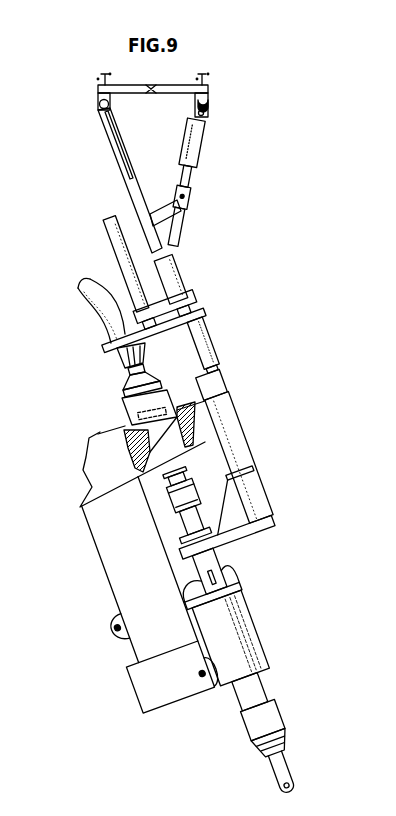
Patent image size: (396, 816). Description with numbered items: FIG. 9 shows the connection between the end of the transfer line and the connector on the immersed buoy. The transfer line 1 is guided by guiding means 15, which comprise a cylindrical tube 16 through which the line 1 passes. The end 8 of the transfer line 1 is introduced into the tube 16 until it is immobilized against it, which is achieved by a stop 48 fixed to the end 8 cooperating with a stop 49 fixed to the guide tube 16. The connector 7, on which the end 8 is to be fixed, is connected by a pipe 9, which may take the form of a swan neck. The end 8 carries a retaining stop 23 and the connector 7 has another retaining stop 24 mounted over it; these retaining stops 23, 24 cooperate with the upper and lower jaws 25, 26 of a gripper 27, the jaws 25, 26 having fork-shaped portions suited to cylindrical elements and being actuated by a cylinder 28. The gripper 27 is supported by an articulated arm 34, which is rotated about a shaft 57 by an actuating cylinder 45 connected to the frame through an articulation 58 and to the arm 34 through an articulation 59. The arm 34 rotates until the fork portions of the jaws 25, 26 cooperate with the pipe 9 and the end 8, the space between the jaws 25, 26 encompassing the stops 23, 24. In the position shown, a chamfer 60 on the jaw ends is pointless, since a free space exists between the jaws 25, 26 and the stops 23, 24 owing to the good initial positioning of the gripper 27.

The transfer line 1 is at (281, 769).
The connector 7 is at (96, 395).
The end of the transfer line 8 is at (208, 483).
The pipe 9 is at (88, 302).
The guiding means 15 is at (307, 660).
The cylindrical tube 16 is at (249, 627).
The retaining stop 23 is at (184, 538).
The retaining stop 24 is at (116, 353).
The upper jaw 25 is at (257, 530).
The lower jaw 26 is at (201, 311).
The gripper 27 is at (252, 334).
The cylinder 28 is at (98, 248).
The articulated arm 34 is at (119, 158).
The actuating cylinder 45 is at (202, 145).
The stop 48 is at (236, 571).
The stop 49 is at (244, 588).
The shaft 57 is at (97, 103).
The hinge 58 is at (209, 104).
The articulation 59 is at (194, 195).
The chamfer 60 is at (102, 347).